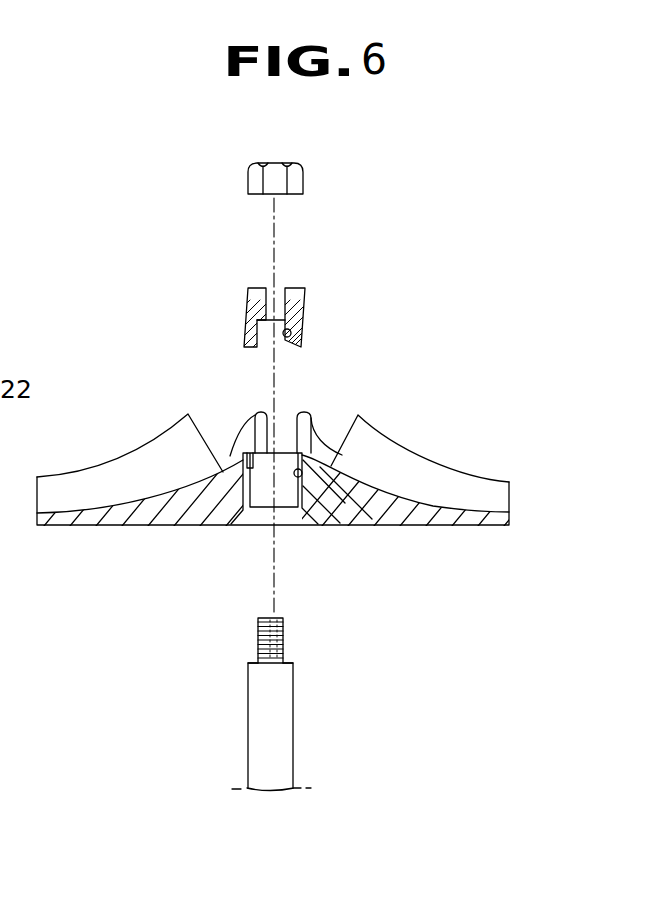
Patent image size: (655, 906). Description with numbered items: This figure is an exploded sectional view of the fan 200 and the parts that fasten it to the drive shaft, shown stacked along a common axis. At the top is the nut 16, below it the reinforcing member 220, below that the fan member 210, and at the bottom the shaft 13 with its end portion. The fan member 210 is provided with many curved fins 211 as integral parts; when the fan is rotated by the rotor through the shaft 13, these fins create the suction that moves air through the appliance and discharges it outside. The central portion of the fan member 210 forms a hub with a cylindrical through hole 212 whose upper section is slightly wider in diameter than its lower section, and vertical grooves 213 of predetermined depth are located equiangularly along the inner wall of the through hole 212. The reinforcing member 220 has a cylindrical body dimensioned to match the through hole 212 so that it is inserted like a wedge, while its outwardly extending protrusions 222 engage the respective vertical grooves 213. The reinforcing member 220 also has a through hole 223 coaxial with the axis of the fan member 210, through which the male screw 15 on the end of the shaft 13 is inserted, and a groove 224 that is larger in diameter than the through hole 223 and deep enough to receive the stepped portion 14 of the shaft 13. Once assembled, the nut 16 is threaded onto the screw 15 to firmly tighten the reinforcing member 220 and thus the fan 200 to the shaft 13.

The shaft 13 is at (278, 740).
The stepped portion 14 is at (256, 660).
The male screw 15 is at (283, 639).
The nut 16 is at (306, 171).
The fan 200 is at (445, 403).
The fan member 210 is at (281, 473).
The curved fins 211 is at (140, 465).
The through hole 212 is at (240, 450).
The vertical grooves 213 is at (301, 477).
The reinforcing member 220 is at (273, 307).
The protrusions 222 is at (245, 318).
The through hole 223 is at (287, 297).
The groove 224 is at (290, 333).